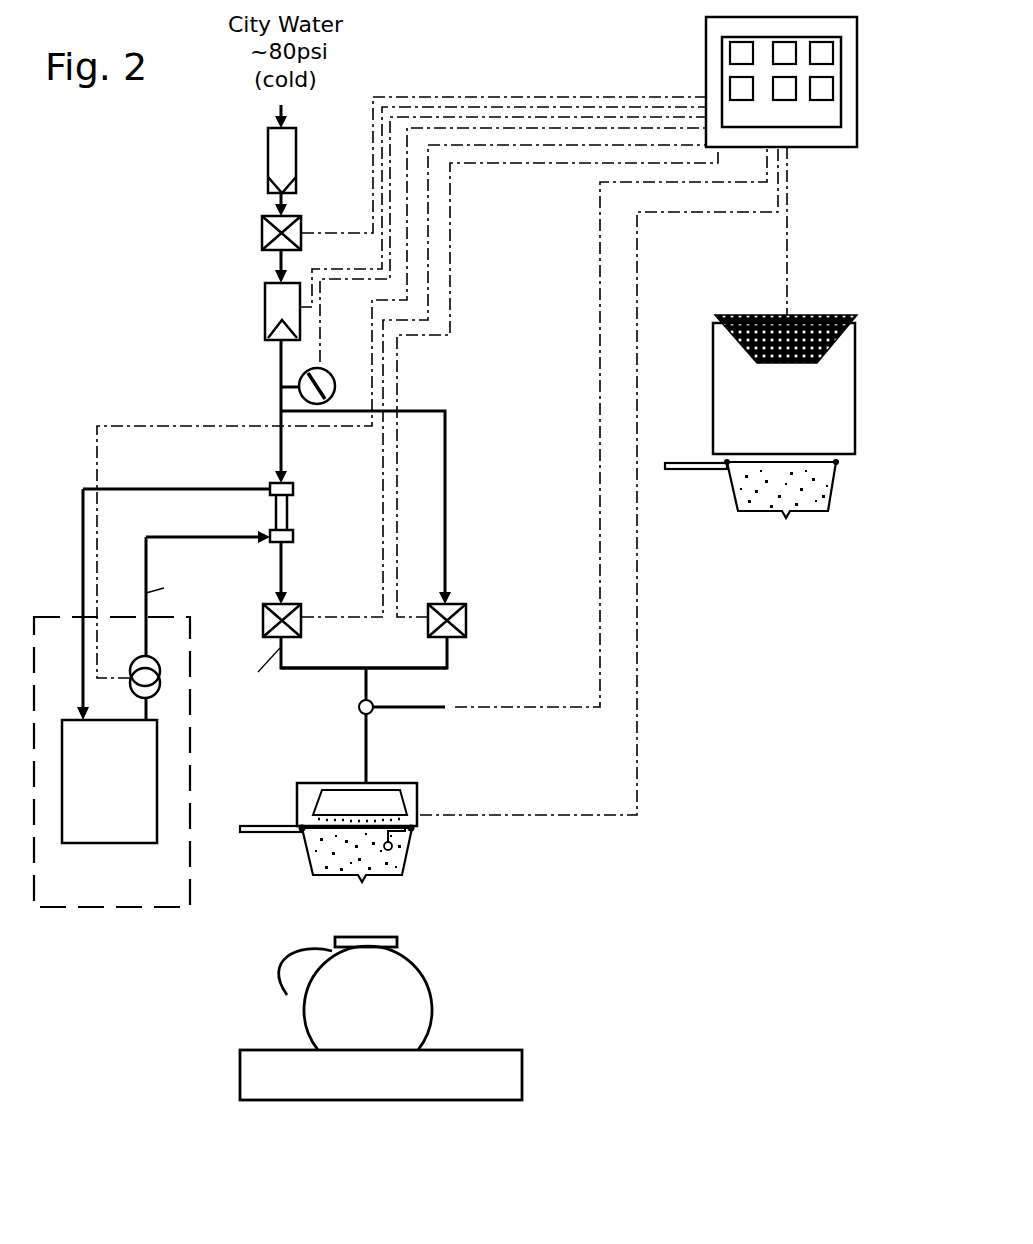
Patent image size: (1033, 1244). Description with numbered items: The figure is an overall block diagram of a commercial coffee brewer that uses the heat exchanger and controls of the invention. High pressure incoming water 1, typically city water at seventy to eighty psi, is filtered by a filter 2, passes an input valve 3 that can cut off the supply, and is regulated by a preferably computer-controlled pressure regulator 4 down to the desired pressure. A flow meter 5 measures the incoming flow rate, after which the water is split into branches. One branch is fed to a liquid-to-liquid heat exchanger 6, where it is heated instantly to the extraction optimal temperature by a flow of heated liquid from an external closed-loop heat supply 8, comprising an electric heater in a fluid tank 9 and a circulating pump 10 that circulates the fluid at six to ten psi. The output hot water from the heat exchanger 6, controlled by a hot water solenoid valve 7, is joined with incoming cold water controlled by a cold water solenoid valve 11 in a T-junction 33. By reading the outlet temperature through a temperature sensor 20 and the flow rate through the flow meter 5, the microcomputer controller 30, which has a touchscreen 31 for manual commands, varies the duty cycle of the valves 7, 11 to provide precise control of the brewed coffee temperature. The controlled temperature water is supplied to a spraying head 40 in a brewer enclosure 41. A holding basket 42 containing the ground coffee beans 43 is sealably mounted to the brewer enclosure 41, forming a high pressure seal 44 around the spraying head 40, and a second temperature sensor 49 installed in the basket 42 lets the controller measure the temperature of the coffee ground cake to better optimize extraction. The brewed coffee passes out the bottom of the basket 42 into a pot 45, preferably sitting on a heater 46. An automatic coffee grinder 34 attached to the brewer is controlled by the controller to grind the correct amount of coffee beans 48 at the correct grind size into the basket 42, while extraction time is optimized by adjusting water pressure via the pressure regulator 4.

The incoming water 1 is at (232, 45).
The filter 2 is at (263, 147).
The input valve 3 is at (262, 233).
The pressure regulator 4 is at (265, 304).
The flow meter 5 is at (329, 373).
The heat exchanger 6 is at (294, 492).
The hot water solenoid valve 7 is at (263, 622).
The external heat supply 8 is at (72, 616).
The heater in fluid tank 9 is at (68, 718).
The circulating pump 10 is at (159, 678).
The cold water solenoid valve 11 is at (487, 640).
The temperature sensor 20 is at (358, 713).
The controller 30 is at (706, 75).
The touchscreen 31 is at (737, 55).
The T-junction 33 is at (371, 668).
The automatic coffee grinder 34 is at (846, 431).
The spraying head 40 is at (400, 790).
The brewer enclosure 41 is at (418, 803).
The coffee ground basket 42 is at (308, 855).
The ground coffee beans 43 is at (330, 857).
The high pressure seal 44 is at (300, 833).
The pot 45 is at (432, 998).
The heater 46 is at (492, 1050).
The coffee beans 48 is at (846, 320).
The second temperature sensor 49 is at (392, 851).